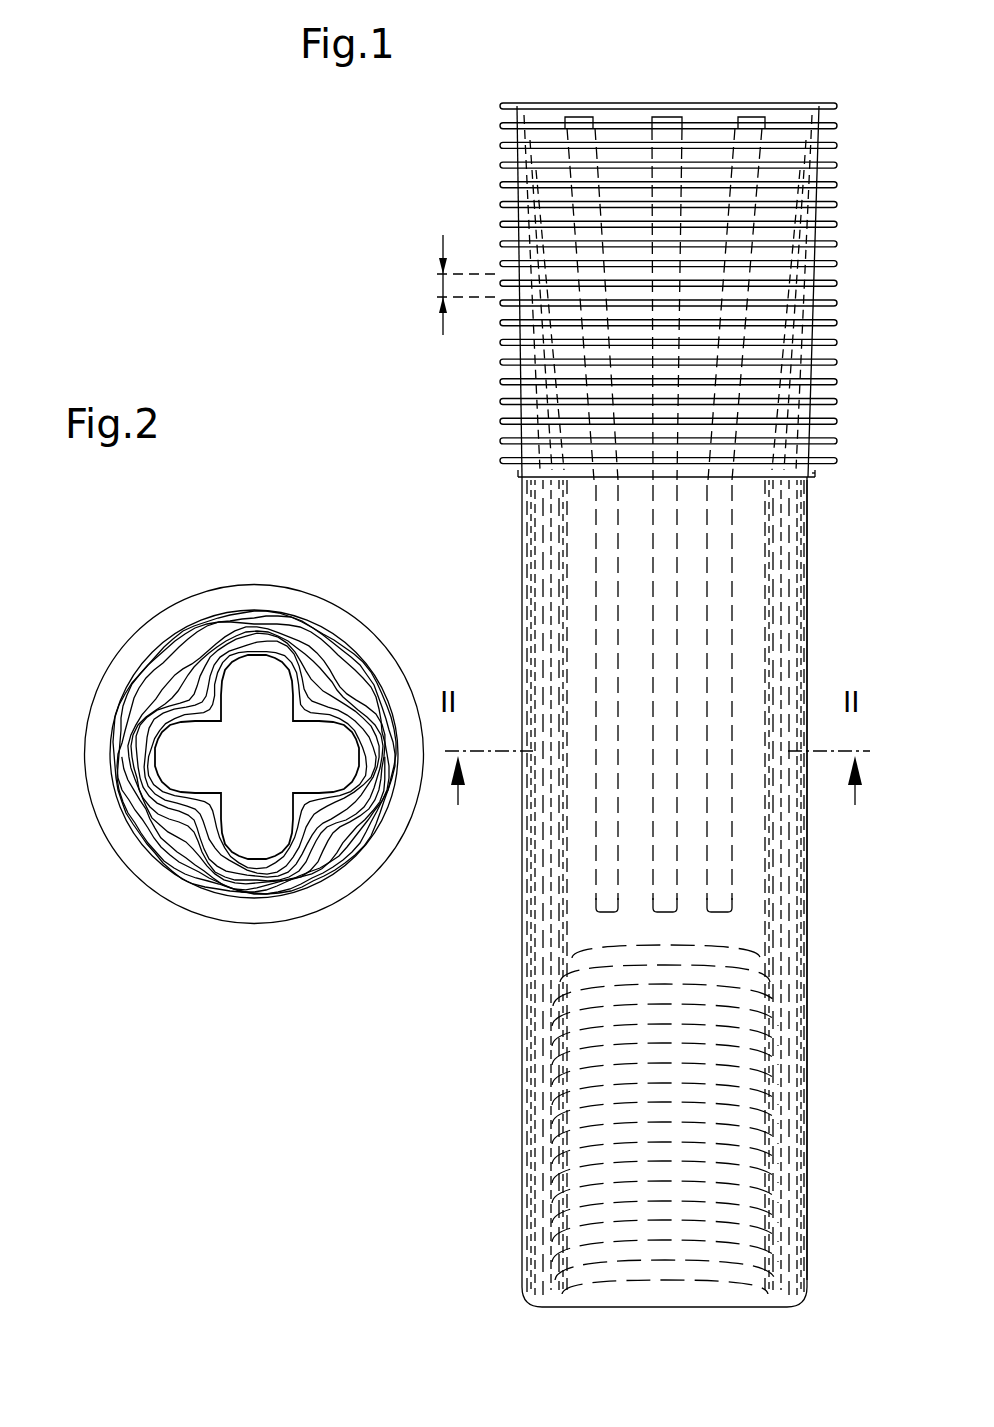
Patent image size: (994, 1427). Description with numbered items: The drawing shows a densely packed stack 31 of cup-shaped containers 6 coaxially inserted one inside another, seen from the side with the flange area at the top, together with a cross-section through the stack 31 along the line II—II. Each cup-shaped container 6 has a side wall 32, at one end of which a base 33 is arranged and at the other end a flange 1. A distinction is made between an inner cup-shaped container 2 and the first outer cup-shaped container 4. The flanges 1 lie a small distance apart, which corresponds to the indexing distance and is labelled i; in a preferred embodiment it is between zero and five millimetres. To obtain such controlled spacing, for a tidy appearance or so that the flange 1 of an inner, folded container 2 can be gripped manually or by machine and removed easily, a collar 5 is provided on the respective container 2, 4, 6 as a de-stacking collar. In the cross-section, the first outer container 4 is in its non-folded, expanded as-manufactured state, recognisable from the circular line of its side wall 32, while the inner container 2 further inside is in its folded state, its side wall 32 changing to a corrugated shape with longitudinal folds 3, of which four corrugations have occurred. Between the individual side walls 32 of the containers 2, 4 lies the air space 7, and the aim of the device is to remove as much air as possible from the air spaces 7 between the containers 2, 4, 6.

In FIG. 1, the flange 1 is at (830, 104).
In FIG. 2, the flange 1 is at (300, 615).
In FIG. 1, the inner cup-shaped container 2 is at (540, 655).
In FIG. 2, the inner cup-shaped container 2 is at (333, 688).
In FIG. 1, the longitudinal folds 3 is at (605, 813).
In FIG. 2, the longitudinal folds 3 is at (238, 650).
In FIG. 1, the first outer cup-shaped container 4 is at (518, 978).
In FIG. 2, the first outer cup-shaped container 4 is at (322, 895).
In FIG. 1, the collar 5 is at (815, 475).
In FIG. 1, the cup-shaped containers 6 is at (745, 905).
In FIG. 1, the air space 7 is at (775, 827).
In FIG. 2, the air space 7 is at (168, 823).
In FIG. 1, the stack 31 is at (856, 374).
In FIG. 2, the stack 31 is at (166, 592).
In FIG. 1, the side wall 32 is at (808, 588).
In FIG. 1, the base 33 is at (750, 1195).
In FIG. 1, the indexing distance i is at (443, 288).